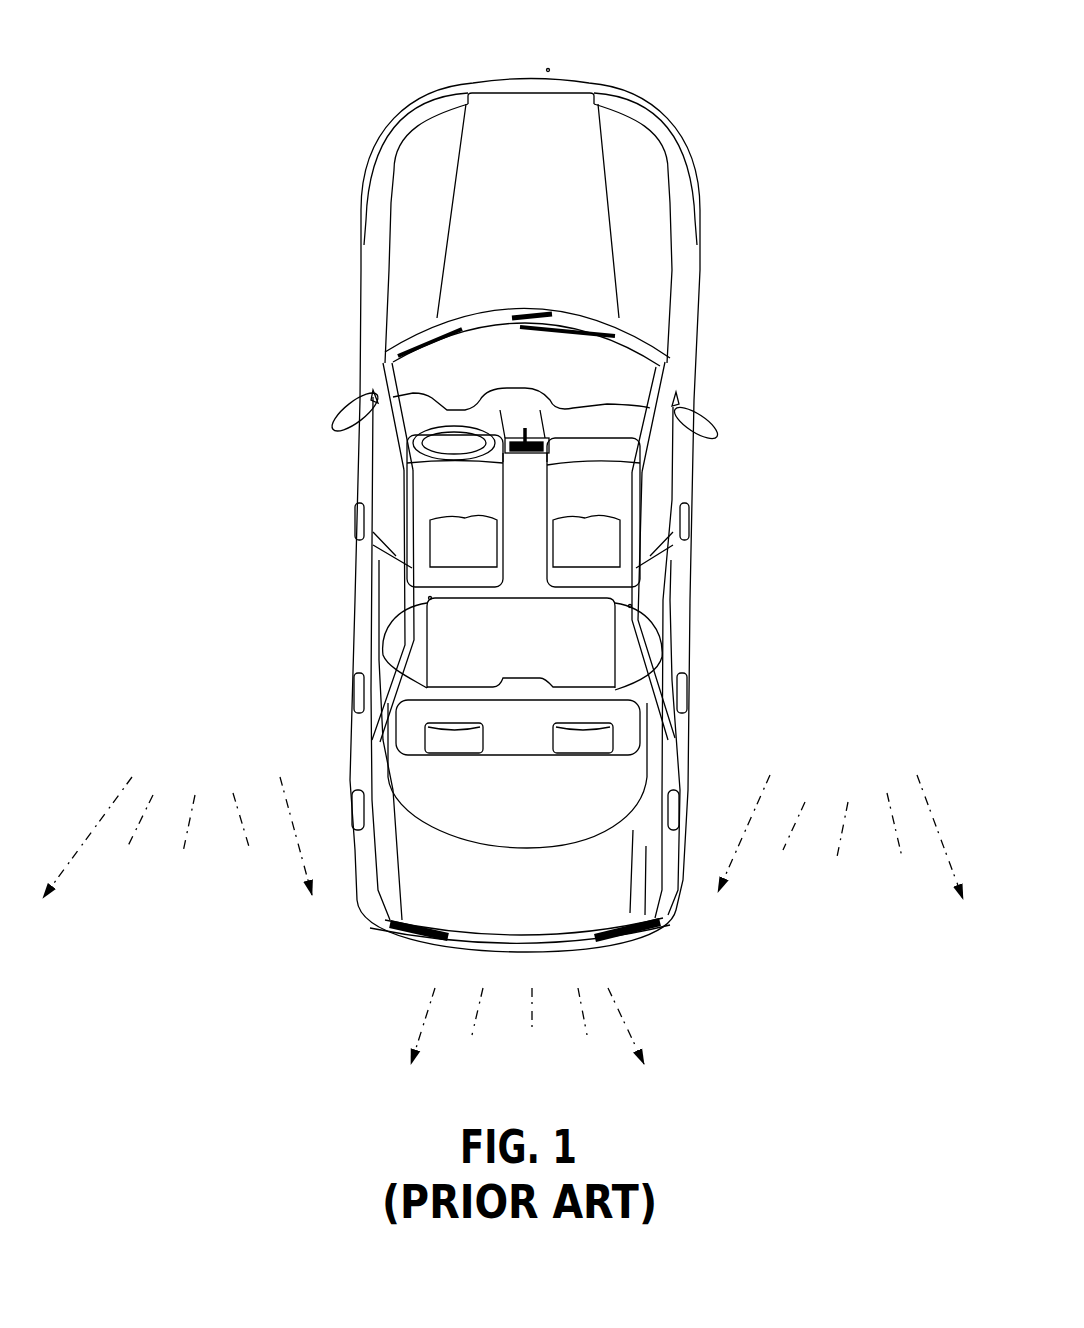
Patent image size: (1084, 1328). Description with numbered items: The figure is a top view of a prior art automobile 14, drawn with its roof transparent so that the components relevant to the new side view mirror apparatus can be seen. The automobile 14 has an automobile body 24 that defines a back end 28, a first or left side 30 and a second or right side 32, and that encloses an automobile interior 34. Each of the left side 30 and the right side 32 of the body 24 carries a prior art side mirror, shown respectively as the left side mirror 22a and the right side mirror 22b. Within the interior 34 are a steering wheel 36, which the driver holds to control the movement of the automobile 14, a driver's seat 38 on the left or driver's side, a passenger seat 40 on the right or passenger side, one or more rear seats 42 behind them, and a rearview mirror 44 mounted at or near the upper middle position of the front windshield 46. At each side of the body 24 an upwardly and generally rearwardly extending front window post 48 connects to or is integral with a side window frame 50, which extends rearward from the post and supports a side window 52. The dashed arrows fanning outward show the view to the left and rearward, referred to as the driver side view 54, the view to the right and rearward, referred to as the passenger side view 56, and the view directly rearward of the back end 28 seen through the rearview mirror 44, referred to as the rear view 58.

The automobile 14 is at (752, 156).
The automobile body 24 is at (375, 252).
The back end 28 is at (565, 952).
The first or left side 30 is at (347, 640).
The second or right side 32 is at (697, 568).
The automobile interior 34 is at (529, 548).
The steering wheel 36 is at (455, 427).
The driver's seat 38 is at (447, 488).
The passenger seat 40 is at (598, 488).
The rear seats 42 is at (553, 648).
The rearview mirror 44 is at (540, 440).
The front windshield 46 is at (617, 333).
The front window post 48 is at (405, 445).
The side window frame 50 is at (546, 70).
The side window 52 is at (390, 522).
The prior art side mirror 22a is at (345, 418).
The prior art side mirror 22b is at (701, 427).
The driver side view 54 is at (177, 837).
The passenger side view 56 is at (840, 837).
The rear view 58 is at (527, 1031).